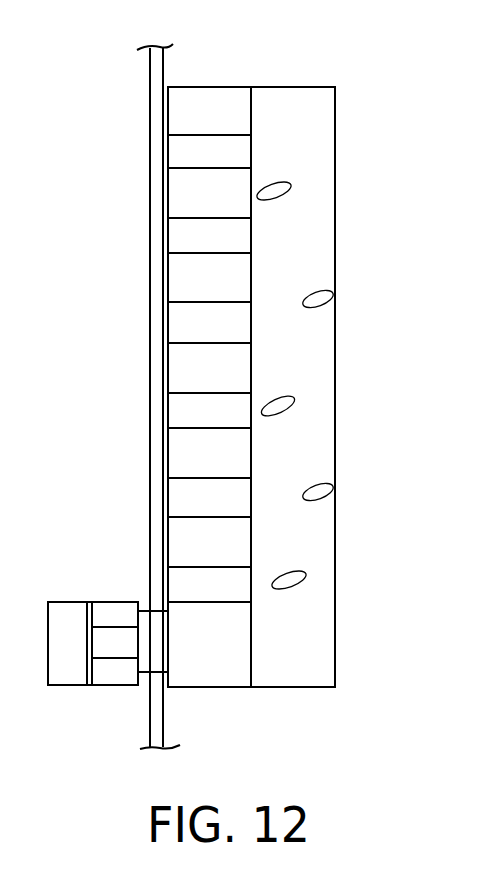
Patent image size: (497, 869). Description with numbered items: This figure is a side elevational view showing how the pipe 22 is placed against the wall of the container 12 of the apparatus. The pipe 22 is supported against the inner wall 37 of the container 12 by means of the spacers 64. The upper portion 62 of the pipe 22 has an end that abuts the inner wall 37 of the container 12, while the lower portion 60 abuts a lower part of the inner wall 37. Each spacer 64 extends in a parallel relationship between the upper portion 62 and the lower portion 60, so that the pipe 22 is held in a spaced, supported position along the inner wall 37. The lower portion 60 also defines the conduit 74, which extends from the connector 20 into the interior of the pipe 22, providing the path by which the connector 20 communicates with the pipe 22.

The container 12 is at (148, 190).
The inner wall 37 is at (163, 63).
The pipe 22 is at (297, 95).
The upper portion 62 is at (207, 100).
The spacer 64 is at (193, 215).
The conduit 74 is at (198, 613).
The lower portion 60 is at (222, 675).
The connector 20 is at (110, 600).